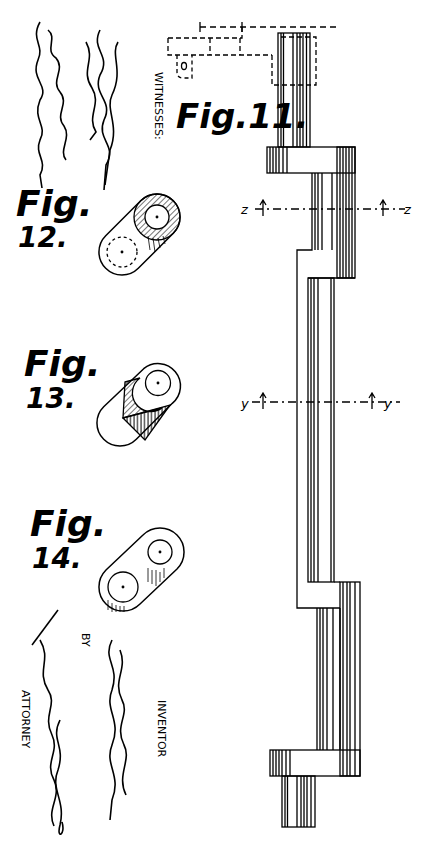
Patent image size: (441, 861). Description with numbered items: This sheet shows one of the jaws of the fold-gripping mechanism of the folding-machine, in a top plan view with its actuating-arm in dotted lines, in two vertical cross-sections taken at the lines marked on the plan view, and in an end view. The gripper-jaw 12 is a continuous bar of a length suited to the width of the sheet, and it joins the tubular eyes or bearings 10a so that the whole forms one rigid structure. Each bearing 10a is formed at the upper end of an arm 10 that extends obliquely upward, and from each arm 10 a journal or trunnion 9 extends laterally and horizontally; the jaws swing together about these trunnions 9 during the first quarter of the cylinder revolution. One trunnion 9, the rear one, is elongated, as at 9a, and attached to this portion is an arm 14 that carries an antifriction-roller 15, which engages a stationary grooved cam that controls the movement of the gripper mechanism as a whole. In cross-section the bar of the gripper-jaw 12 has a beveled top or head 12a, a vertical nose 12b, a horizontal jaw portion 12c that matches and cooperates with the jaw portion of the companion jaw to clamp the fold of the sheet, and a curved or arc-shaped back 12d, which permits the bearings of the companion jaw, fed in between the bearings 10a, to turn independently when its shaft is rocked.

In FIG. 11, the journal or trunnion 9 is at (310, 113).
In FIG. 12, the journal or trunnion 9 is at (108, 258).
In FIG. 14, the journal or trunnion 9 is at (130, 595).
In FIG. 11, the elongated portion of rear trunnion 9a is at (305, 67).
In FIG. 11, the arm 10 is at (313, 461).
In FIG. 12, the arm 10 is at (148, 263).
In FIG. 14, the arm 10 is at (172, 575).
In FIG. 11, the eye or bearing 10a is at (356, 245).
In FIG. 12, the eye or bearing 10a is at (176, 208).
In FIG. 11, the gripper-jaw 12 is at (301, 430).
In FIG. 13, the gripper-jaw 12 is at (139, 405).
In FIG. 13, the beveled top or head 12a is at (127, 382).
In FIG. 13, the vertical nose 12b is at (200, 366).
In FIG. 13, the horizontal jaw portion 12c is at (130, 418).
In FIG. 13, the curved or arc-shaped back 12d is at (203, 361).
In FIG. 11, the arm 14 is at (232, 50).
In FIG. 11, the antifriction-roller 15 is at (280, 28).